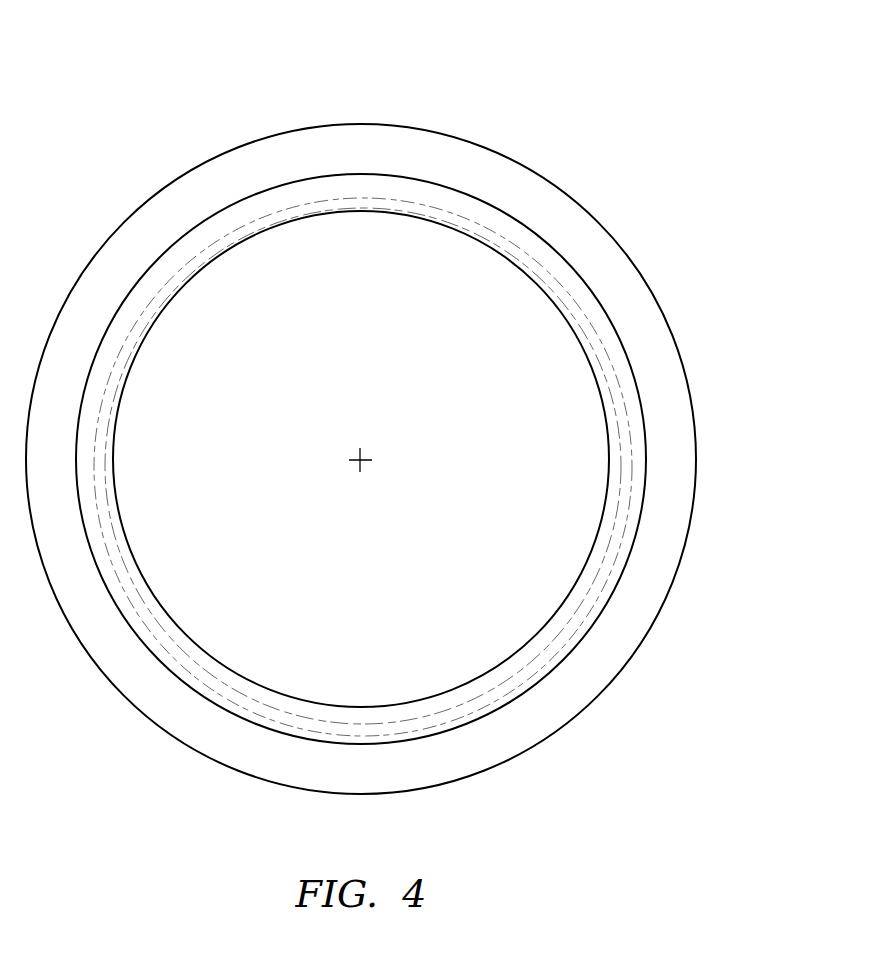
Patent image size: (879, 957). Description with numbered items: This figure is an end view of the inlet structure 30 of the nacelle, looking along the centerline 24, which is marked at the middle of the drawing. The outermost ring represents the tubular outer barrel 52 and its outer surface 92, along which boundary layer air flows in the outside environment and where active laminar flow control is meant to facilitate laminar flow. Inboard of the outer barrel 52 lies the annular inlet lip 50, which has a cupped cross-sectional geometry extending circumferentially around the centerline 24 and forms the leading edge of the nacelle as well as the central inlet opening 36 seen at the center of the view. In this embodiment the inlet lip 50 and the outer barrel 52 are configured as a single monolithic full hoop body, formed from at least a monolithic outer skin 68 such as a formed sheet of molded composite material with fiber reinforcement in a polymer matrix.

The inlet structure 30 is at (373, 411).
The outer surface 92 is at (208, 185).
The outer barrel 52 is at (373, 440).
The monolithic outer skin 68 is at (660, 352).
The annular inlet lip 50 is at (491, 219).
The inlet opening 36 is at (241, 452).
The centerline 24 is at (365, 463).